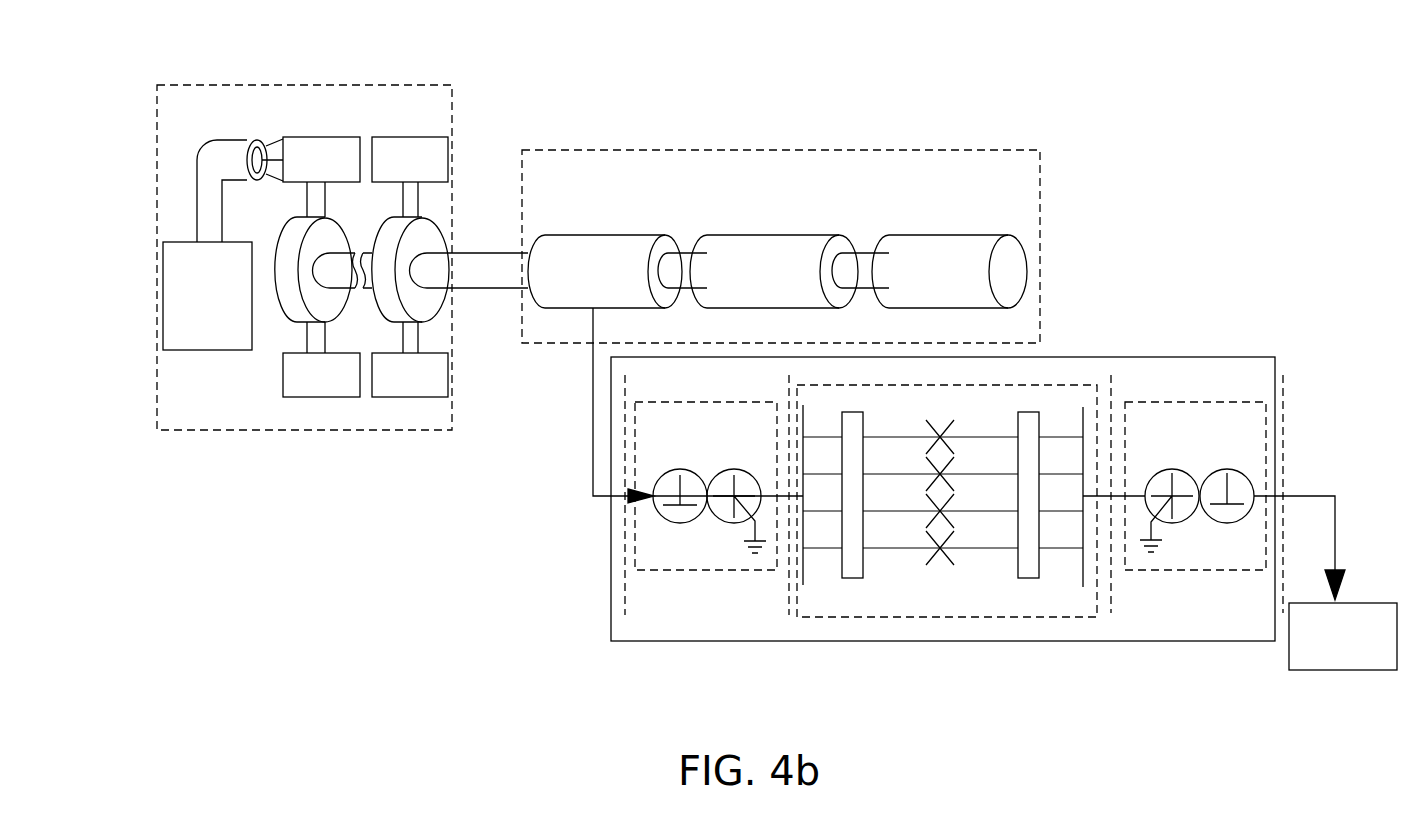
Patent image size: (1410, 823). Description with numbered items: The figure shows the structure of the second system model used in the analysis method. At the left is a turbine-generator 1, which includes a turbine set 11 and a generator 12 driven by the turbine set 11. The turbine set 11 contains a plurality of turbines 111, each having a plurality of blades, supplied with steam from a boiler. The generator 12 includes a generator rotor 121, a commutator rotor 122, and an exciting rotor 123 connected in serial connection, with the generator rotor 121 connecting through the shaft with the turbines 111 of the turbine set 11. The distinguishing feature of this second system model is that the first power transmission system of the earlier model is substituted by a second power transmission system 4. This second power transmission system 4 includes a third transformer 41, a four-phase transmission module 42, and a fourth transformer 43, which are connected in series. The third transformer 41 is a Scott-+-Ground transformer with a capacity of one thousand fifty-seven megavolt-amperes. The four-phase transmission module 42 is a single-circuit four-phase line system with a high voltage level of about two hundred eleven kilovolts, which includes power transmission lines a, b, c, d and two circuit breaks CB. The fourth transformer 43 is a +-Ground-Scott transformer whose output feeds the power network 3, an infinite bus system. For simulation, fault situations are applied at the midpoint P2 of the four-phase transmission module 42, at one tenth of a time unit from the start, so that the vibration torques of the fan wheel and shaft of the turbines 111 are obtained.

The turbine-generator 1 is at (567, 45).
The turbine set 11 is at (435, 82).
The turbine 111 is at (290, 300).
The generator 12 is at (547, 148).
The generator rotor 121 is at (603, 235).
The commutator rotor 122 is at (763, 234).
The exciting rotor 123 is at (925, 234).
The second power transmission system 4 is at (1098, 641).
The third transformer 41 is at (728, 570).
The four-phase transmission module 42 is at (945, 617).
The fourth transformer 43 is at (1170, 570).
The power network 3 is at (1328, 670).
The circuit break CB is at (850, 577).
The midpoint P2 is at (940, 478).